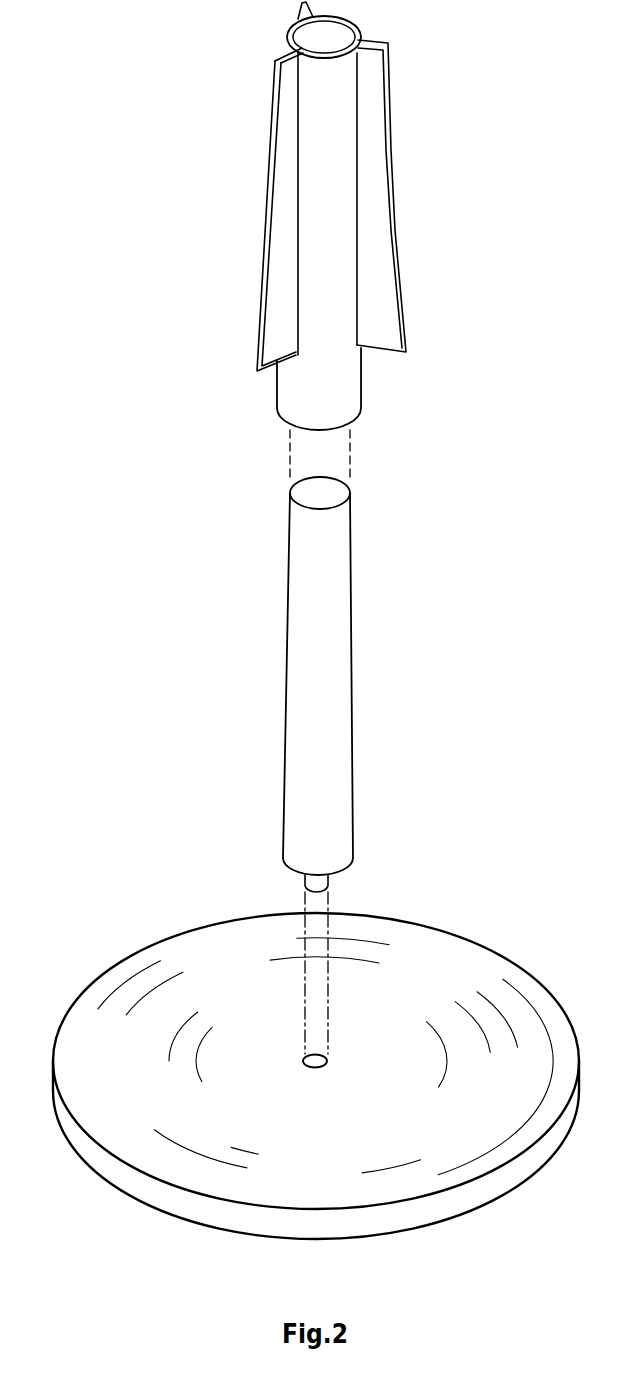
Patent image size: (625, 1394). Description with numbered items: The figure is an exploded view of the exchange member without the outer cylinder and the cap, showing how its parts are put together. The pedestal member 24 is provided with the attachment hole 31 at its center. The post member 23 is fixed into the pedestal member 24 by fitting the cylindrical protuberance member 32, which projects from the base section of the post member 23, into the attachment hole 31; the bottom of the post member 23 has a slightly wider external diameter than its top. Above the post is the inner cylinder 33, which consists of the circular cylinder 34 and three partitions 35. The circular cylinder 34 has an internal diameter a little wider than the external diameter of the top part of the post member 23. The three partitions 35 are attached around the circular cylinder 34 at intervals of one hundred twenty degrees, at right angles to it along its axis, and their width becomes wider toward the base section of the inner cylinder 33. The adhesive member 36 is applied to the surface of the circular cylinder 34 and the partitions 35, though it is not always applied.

The post member 23 is at (340, 632).
The pedestal member 24 is at (498, 966).
The attachment hole 31 is at (307, 1058).
The cylindrical protuberance member 32 is at (328, 884).
The inner cylinder 33 is at (360, 412).
The circular cylinder 34 is at (362, 392).
The partitions 35 is at (388, 193).
The adhesive member 36 is at (310, 280).